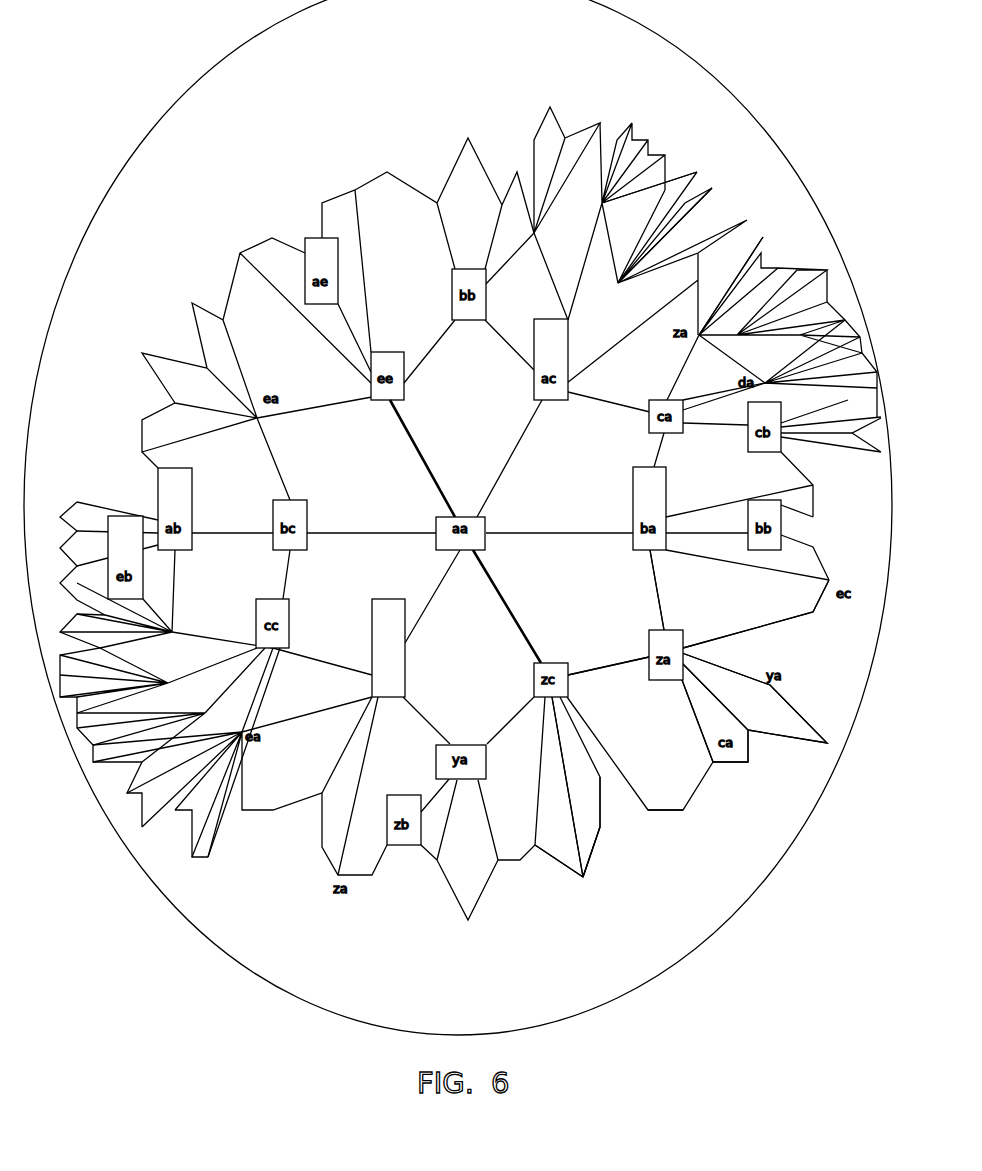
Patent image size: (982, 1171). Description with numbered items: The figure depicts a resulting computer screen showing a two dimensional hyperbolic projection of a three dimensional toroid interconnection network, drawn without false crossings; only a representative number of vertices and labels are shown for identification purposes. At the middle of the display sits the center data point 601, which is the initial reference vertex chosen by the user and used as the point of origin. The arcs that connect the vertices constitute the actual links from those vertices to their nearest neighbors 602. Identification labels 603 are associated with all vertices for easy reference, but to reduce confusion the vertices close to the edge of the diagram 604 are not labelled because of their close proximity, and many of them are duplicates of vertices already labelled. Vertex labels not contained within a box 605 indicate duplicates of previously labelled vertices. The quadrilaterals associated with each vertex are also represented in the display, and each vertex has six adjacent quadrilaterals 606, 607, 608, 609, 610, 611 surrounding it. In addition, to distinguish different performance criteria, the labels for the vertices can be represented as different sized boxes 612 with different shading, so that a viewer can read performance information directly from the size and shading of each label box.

The center data point 601 is at (490, 530).
The nearest neighbors 602 is at (371, 533).
The identification labels 603 is at (404, 383).
The vertices close to the edge of the diagram 604 is at (700, 217).
The vertex labels not contained within a box 605 is at (798, 680).
The adjacent quadrilateral 606 is at (494, 614).
The adjacent quadrilateral 607 is at (618, 663).
The adjacent quadrilateral 608 is at (633, 763).
The adjacent quadrilateral 609 is at (667, 810).
The adjacent quadrilateral 610 is at (602, 842).
The adjacent quadrilateral 611 is at (517, 710).
The different sized boxes 612 is at (387, 598).